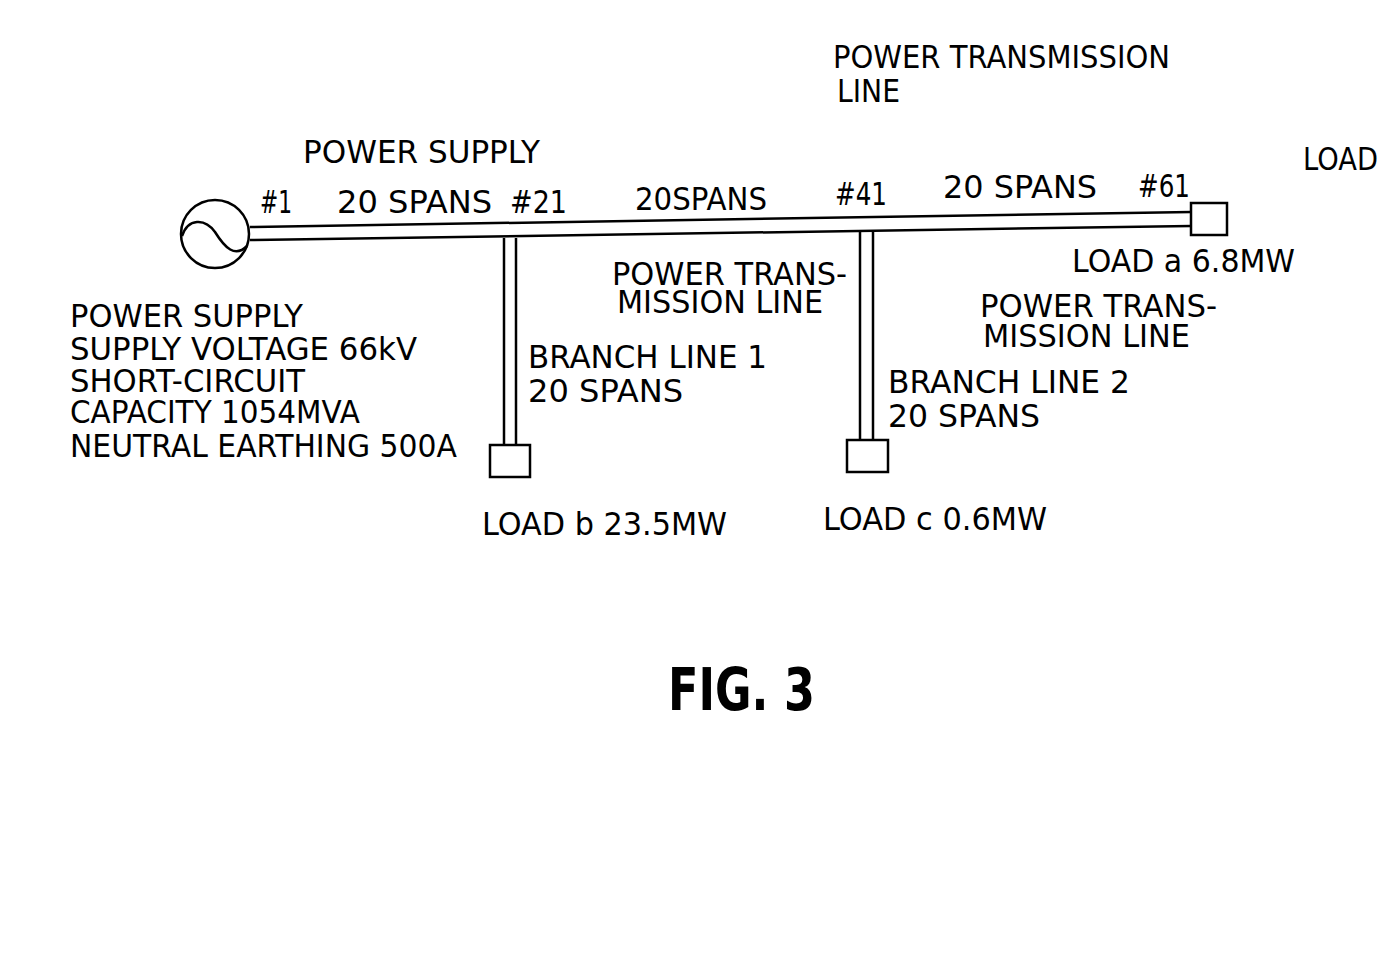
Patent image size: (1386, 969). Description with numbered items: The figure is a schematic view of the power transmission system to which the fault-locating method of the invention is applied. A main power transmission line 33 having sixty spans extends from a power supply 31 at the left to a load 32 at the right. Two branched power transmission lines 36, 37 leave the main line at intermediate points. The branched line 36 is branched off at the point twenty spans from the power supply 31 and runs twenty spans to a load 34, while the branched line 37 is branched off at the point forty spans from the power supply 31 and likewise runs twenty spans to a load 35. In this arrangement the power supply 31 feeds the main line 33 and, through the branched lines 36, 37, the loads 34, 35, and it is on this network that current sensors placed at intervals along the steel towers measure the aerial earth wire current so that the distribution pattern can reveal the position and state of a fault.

The power supply 31 is at (205, 200).
The load 32 is at (1207, 203).
The power transmission line 33 is at (790, 219).
The load 34 is at (530, 458).
The load 35 is at (888, 458).
The branched power transmission line 36 is at (517, 284).
The branched power transmission line 37 is at (873, 319).